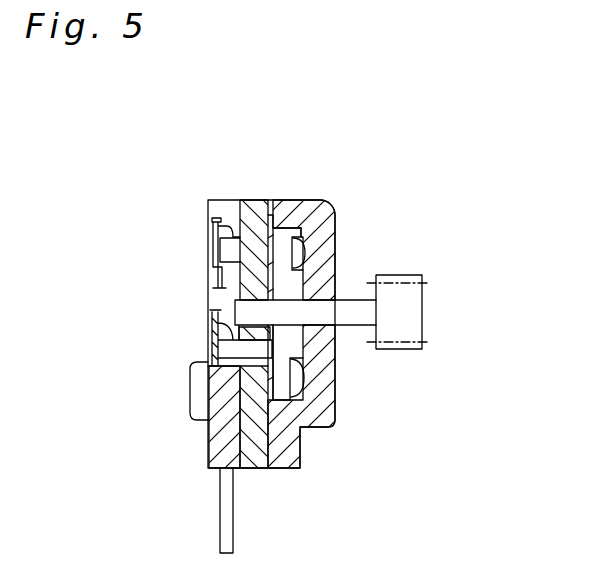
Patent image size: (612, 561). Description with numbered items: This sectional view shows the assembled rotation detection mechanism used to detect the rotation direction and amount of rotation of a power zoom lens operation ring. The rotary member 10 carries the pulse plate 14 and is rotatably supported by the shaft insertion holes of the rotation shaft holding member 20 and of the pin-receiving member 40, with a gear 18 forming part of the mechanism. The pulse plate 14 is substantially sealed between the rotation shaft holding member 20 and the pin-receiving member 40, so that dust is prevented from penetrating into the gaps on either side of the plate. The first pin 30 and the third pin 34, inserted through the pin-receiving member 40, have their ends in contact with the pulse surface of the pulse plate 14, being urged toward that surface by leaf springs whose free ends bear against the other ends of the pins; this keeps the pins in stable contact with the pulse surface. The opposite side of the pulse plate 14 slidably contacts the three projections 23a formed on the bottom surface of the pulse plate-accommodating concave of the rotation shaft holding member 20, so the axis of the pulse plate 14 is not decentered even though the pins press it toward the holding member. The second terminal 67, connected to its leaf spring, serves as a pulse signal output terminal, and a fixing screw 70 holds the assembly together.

The rotary member 10 is at (350, 300).
The pulse plate 14 is at (283, 237).
The gear 18 is at (405, 275).
The rotation shaft holding member 20 is at (315, 203).
The projections 23a is at (300, 257).
The first pin 30 is at (211, 220).
The third pin 34 is at (213, 322).
The pin-receiving member 40 is at (252, 202).
The second terminal 67 is at (232, 525).
The fixing screw 70 is at (192, 384).